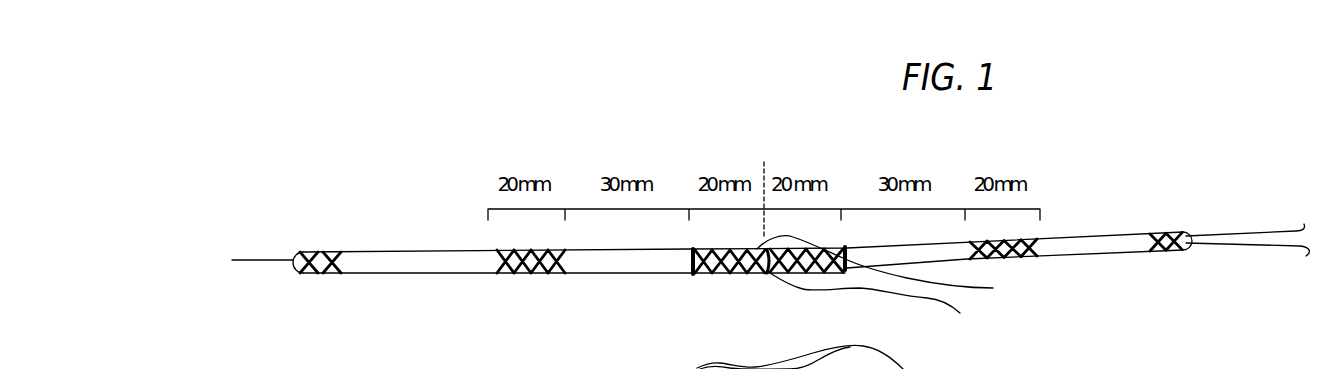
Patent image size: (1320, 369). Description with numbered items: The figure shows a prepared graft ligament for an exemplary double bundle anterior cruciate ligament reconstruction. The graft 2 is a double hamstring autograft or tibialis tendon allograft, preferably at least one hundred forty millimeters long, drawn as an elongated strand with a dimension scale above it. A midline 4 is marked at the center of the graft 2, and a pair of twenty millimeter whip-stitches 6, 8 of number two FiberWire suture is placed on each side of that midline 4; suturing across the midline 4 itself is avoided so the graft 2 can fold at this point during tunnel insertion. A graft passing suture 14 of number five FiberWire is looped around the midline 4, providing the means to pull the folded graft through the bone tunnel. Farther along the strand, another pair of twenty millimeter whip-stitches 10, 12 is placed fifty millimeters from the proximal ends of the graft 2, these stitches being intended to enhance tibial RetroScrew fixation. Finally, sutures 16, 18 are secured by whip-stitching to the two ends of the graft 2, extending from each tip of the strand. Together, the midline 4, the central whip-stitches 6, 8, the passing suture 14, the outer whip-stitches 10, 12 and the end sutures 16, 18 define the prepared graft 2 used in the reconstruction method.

The graft 2 is at (565, 300).
The midline 4 is at (764, 187).
The whip-stitch 6 is at (708, 273).
The whip-stitch 8 is at (824, 248).
The whip-stitch 10 is at (498, 273).
The whip-stitch 12 is at (1030, 260).
The graft passing suture 14 is at (788, 282).
The suture 16 is at (277, 260).
The suture 18 is at (1202, 244).